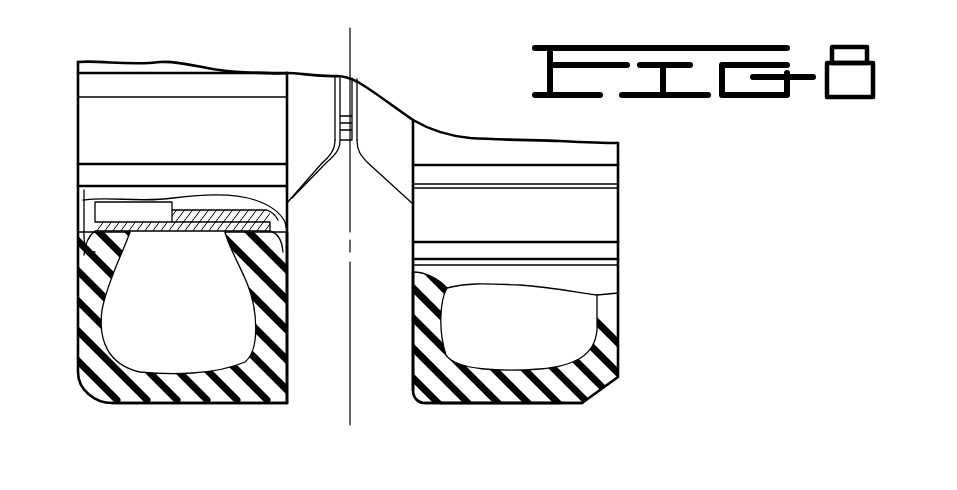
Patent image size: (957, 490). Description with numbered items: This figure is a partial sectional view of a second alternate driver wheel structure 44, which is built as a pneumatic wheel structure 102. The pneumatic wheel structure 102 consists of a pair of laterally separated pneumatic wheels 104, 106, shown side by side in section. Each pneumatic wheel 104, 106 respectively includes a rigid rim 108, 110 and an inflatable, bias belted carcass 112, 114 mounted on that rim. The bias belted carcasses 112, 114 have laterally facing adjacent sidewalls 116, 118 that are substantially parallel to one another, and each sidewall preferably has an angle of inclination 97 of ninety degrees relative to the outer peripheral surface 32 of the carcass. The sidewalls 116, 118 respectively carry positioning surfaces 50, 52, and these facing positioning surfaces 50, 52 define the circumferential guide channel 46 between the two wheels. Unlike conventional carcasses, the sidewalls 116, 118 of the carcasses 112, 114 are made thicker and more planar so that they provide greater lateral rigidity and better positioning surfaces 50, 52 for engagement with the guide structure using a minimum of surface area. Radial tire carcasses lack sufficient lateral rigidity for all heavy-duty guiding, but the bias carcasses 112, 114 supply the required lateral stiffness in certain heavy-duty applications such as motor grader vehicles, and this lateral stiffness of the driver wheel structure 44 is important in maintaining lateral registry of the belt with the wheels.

The pneumatic wheel 104 is at (62, 213).
The pneumatic wheel 106 is at (641, 309).
The rigid rim 108 is at (83, 247).
The rigid rim 110 is at (386, 108).
The bias belted carcass 112 is at (88, 362).
The bias belted carcass 114 is at (607, 357).
The sidewall 116 is at (285, 327).
The sidewall 118 is at (417, 347).
The angle of inclination 97 is at (257, 392).
The outer peripheral surface 32 is at (217, 403).
The driver wheel structure 44 is at (165, 412).
The circumferential guide channel 46 is at (330, 405).
The positioning surface 50 is at (289, 317).
The positioning surface 52 is at (406, 313).
The pneumatic wheel structure 102 is at (404, 423).